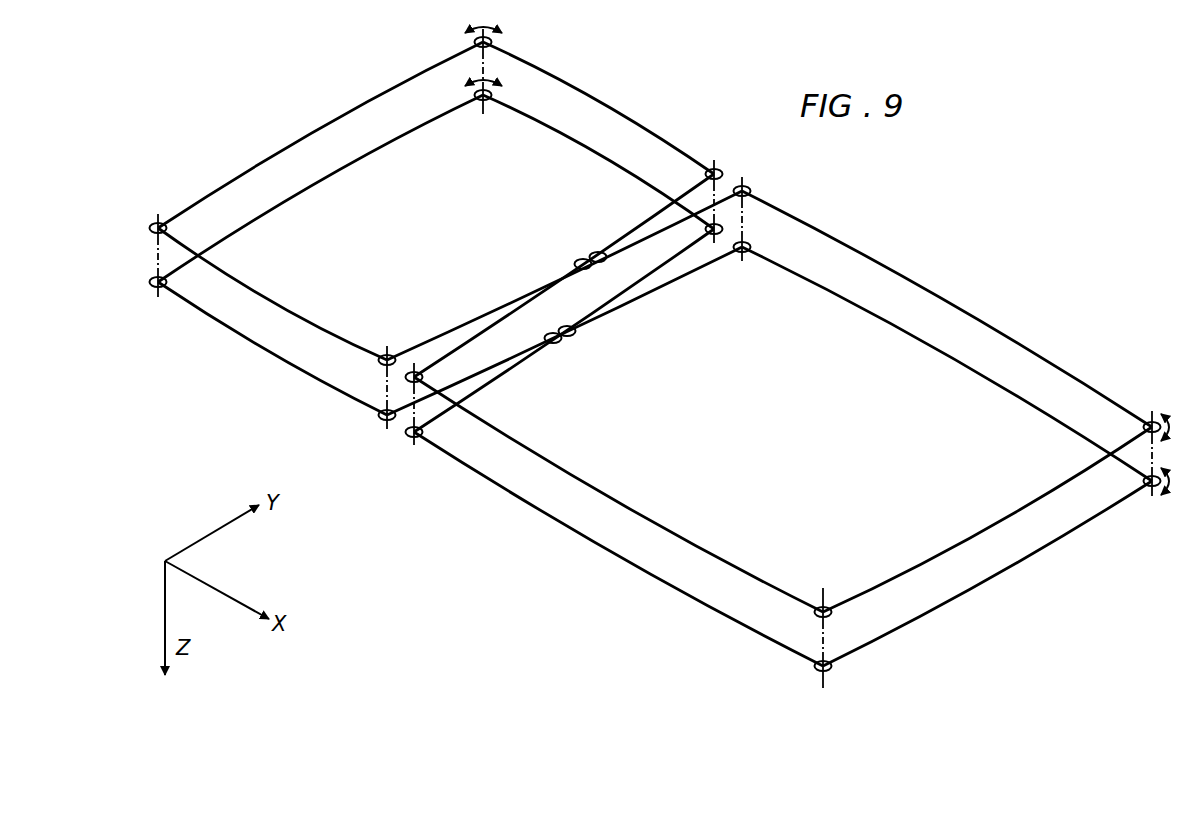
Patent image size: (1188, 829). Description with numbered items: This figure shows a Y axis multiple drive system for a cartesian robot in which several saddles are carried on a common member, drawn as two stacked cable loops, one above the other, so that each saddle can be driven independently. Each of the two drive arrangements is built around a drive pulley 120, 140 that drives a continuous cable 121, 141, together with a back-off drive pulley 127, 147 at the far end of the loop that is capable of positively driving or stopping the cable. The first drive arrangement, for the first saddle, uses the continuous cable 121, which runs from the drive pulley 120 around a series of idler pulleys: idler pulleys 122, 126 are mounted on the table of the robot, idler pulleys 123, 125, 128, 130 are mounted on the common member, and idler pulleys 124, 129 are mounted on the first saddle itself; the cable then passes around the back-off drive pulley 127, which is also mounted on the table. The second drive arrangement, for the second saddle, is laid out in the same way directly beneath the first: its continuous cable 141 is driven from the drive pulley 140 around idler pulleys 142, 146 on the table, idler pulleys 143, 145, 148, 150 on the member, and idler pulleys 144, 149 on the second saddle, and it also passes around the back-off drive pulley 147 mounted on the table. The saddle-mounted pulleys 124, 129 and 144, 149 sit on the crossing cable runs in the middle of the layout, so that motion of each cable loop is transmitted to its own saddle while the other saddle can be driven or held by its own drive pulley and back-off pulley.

The drive pulley 120 is at (492, 49).
The continuous cable 121 is at (302, 137).
The idler pulley 122 is at (166, 224).
The idler pulley 123 is at (392, 357).
The idler pulley 124 is at (580, 260).
The idler pulley 125 is at (421, 374).
The idler pulley 126 is at (827, 608).
The back-off drive pulley 127 is at (1145, 427).
The idler pulley 128 is at (748, 188).
The idler pulley 129 is at (598, 252).
The idler pulley 130 is at (720, 170).
The drive pulley 140 is at (486, 102).
The continuous cable 141 is at (393, 142).
The idler pulley 142 is at (163, 288).
The idler pulley 143 is at (384, 419).
The idler pulley 144 is at (556, 343).
The idler pulley 145 is at (411, 437).
The idler pulley 146 is at (818, 670).
The back-off drive pulley 147 is at (1145, 481).
The idler pulley 148 is at (740, 252).
The idler pulley 149 is at (575, 332).
The idler pulley 150 is at (707, 232).